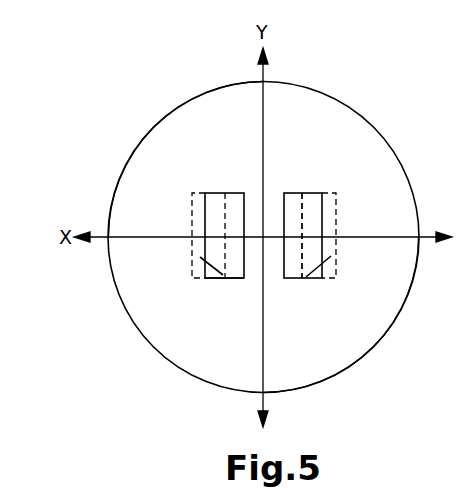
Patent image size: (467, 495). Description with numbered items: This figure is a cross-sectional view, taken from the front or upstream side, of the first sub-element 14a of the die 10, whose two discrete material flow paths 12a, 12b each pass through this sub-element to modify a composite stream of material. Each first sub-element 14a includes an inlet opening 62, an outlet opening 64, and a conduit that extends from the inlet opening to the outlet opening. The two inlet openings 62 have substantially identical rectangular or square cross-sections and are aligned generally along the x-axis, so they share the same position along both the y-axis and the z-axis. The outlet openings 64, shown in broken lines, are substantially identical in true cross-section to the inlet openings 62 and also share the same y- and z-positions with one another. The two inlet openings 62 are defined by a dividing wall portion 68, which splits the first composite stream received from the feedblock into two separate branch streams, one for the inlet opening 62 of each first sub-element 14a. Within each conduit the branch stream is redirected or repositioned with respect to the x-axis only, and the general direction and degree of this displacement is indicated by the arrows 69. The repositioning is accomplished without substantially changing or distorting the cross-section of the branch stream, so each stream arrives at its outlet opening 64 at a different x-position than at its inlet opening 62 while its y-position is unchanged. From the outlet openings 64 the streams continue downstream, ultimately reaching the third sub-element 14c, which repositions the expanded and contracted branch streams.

The die 10 is at (118, 72).
The material flow path 12a is at (146, 296).
The material flow path 12b is at (304, 305).
The first sub-element 14a is at (302, 193).
The third sub-element 14c is at (216, 279).
The inlet opening 62 is at (238, 193).
The outlet opening 64 is at (199, 193).
The dividing wall portion 68 is at (272, 268).
The arrows 69 is at (190, 262).